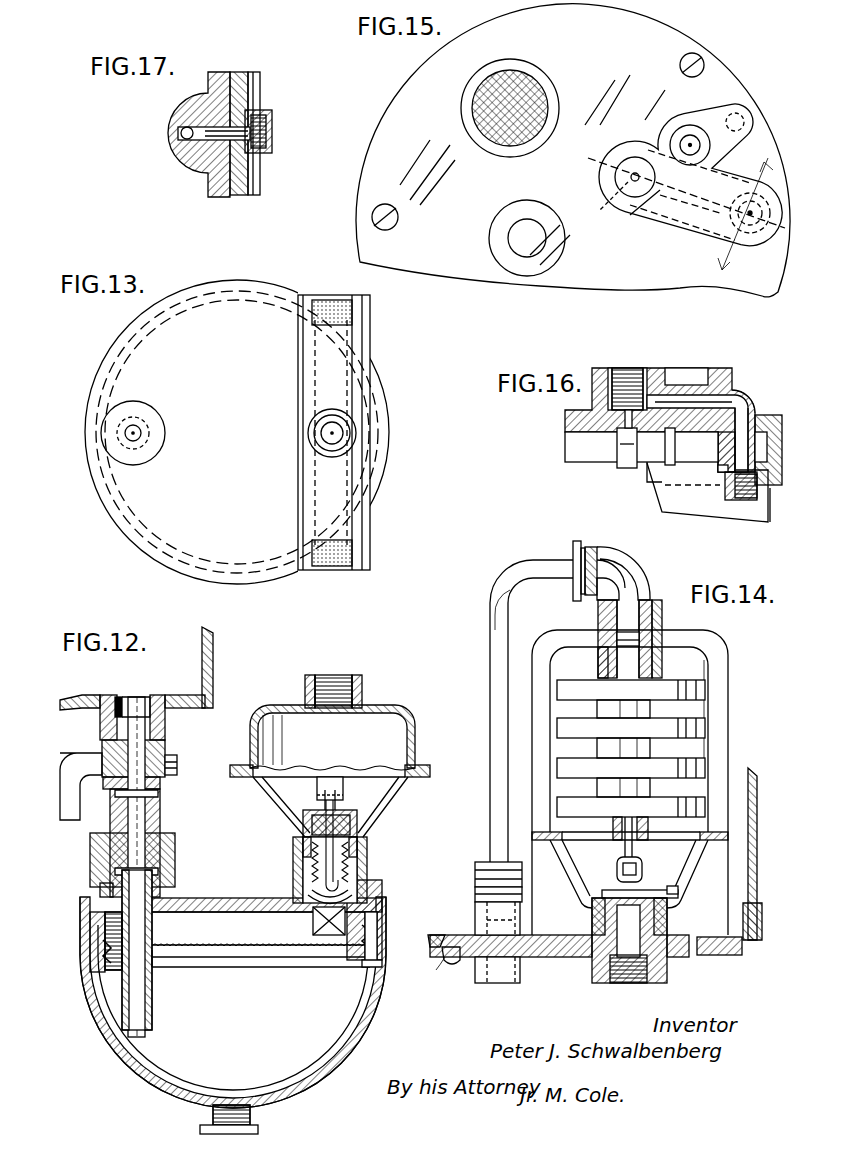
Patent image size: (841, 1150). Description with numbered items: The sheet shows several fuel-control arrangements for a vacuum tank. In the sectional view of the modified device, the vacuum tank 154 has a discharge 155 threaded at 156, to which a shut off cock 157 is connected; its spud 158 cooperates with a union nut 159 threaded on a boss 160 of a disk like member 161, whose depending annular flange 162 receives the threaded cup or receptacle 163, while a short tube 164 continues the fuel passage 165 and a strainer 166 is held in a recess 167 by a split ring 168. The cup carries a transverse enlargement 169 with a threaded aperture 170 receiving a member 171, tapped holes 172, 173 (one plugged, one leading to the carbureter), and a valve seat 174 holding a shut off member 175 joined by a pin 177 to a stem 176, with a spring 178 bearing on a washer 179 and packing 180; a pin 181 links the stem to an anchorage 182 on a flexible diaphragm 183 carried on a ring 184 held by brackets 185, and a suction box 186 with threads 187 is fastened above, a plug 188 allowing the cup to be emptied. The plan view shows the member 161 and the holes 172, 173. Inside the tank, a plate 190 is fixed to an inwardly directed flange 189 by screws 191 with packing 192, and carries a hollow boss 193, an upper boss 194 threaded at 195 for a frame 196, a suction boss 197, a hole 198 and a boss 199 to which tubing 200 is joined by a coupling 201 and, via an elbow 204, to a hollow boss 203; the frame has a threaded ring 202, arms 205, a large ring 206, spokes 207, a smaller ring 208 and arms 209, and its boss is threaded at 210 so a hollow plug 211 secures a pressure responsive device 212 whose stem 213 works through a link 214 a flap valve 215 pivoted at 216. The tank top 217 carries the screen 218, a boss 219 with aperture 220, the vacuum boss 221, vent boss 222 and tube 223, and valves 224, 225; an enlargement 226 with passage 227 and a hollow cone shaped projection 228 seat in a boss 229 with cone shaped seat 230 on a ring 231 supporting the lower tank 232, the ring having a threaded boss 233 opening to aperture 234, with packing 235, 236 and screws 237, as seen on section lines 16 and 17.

In FIG. 15, the section line 16 is at (577, 180).
In FIG. 15, the section line 17— 17 is at (745, 218).
In FIG. 12, the vacuum tank 154 is at (202, 650).
In FIG. 12, the discharge 155 is at (168, 694).
In FIG. 12, the threads 156 is at (165, 728).
In FIG. 12, the shut off cock 157 is at (166, 752).
In FIG. 12, the spud 158 is at (160, 822).
In FIG. 12, the union nut 159 is at (176, 848).
In FIG. 13, the boss 160 is at (158, 422).
In FIG. 12, the boss 160 is at (168, 898).
In FIG. 13, the disk like member 161 is at (237, 432).
In FIG. 12, the disk like member 161 is at (252, 900).
In FIG. 12, the depending annular flange 162 is at (100, 960).
In FIG. 12, the cup or receptacle 163 is at (370, 995).
In FIG. 12, the short tube 164 is at (261, 928).
In FIG. 12, the fuel passage 165 is at (152, 975).
In FIG. 12, the strainer 166 is at (275, 946).
In FIG. 12, the recess 167 is at (380, 966).
In FIG. 12, the split ring 168 is at (348, 968).
In FIG. 13, the transverse enlargement 169 is at (306, 362).
In FIG. 13, the threaded aperture 170 is at (308, 432).
In FIG. 12, the threaded aperture 170 is at (367, 868).
In FIG. 12, the member 171 is at (368, 851).
In FIG. 13, the tapped hole 172 is at (335, 282).
In FIG. 13, the tapped hole 173 is at (318, 568).
In FIG. 12, the valve seat 174 is at (382, 912).
In FIG. 12, the shut off member 175 is at (312, 920).
In FIG. 12, the stem or rod 176 is at (345, 884).
In FIG. 12, the pin 177 is at (308, 894).
In FIG. 12, the spring 178 is at (311, 866).
In FIG. 12, the washer 179 is at (302, 841).
In FIG. 12, the packing 180 is at (315, 826).
In FIG. 12, the pin 181 is at (343, 796).
In FIG. 12, the anchorage 182 is at (329, 776).
In FIG. 12, the flexible diaphragm 183 is at (388, 766).
In FIG. 12, the ring 184 is at (430, 774).
In FIG. 12, the brackets 185 is at (392, 807).
In FIG. 12, the suction box 186 is at (415, 700).
In FIG. 12, the threads 187 is at (330, 674).
In FIG. 12, the plug 188 is at (258, 1128).
In FIG. 14, the inwardly directed flange 189 is at (442, 935).
In FIG. 14, the plate 190 is at (548, 957).
In FIG. 14, the screws 191 is at (450, 968).
In FIG. 14, the packing 192 is at (440, 968).
In FIG. 14, the hollow boss 193 is at (668, 975).
In FIG. 14, the upper boss 194 is at (668, 914).
In FIG. 14, the external threads 195 is at (592, 914).
In FIG. 14, the frame 196 is at (695, 851).
In FIG. 14, the hollow boss 197 is at (514, 983).
In FIG. 14, the hole 198 is at (518, 918).
In FIG. 14, the boss 199 is at (476, 896).
In FIG. 14, the tubing 200 is at (490, 680).
In FIG. 14, the coupling 201 is at (484, 862).
In FIG. 14, the threaded ring 202 is at (667, 920).
In FIG. 14, the hollow boss 203 is at (672, 588).
In FIG. 14, the elbow 204 is at (633, 556).
In FIG. 14, the arms 205 is at (560, 892).
In FIG. 14, the large ring 206 is at (612, 830).
In FIG. 14, the spokes 207 is at (668, 840).
In FIG. 14, the smaller ring 208 is at (645, 835).
In FIG. 14, the arms 209 is at (730, 700).
In FIG. 14, the internal threads 210 is at (664, 668).
In FIG. 14, the hollow plug 211 is at (598, 678).
In FIG. 14, the pressure responsive device 212 is at (631, 748).
In FIG. 14, the stem 213 is at (624, 855).
In FIG. 14, the link 214 is at (644, 870).
In FIG. 14, the flap valve 215 is at (612, 890).
In FIG. 14, the pivot 216 is at (672, 886).
In FIG. 17, the top 217 is at (214, 186).
In FIG. 15, the top 217 is at (573, 150).
In FIG. 16, the top 217 is at (568, 413).
In FIG. 15, the screen 218 is at (485, 108).
In FIG. 15, the boss 219 is at (530, 210).
In FIG. 15, the aperture 220 is at (527, 238).
In FIG. 15, the hollow boss 221 is at (625, 160).
In FIG. 16, the hollow boss 221 is at (620, 368).
In FIG. 15, the hollow boss 222 is at (682, 125).
In FIG. 15, the tube 223 is at (735, 112).
In FIG. 15, the valve 224 is at (603, 201).
In FIG. 16, the valve 224 is at (617, 447).
In FIG. 15, the valve 225 is at (690, 145).
In FIG. 16, the valve 225 is at (662, 446).
In FIG. 15, the enlargement 226 is at (678, 230).
In FIG. 16, the enlargement 226 is at (715, 395).
In FIG. 17, the passage 227 is at (180, 131).
In FIG. 15, the passage 227 is at (700, 245).
In FIG. 16, the passage 227 is at (768, 374).
In FIG. 16, the hollow cone shaped projection 228 is at (770, 391).
In FIG. 16, the boss 229 is at (780, 406).
In FIG. 16, the cone shaped seat 230 is at (718, 443).
In FIG. 17, the ring 231 is at (257, 75).
In FIG. 16, the ring 231 is at (645, 480).
In FIG. 16, the outer or lower tank 232 is at (745, 514).
In FIG. 17, the threaded boss 233 is at (262, 110).
In FIG. 16, the threaded boss 233 is at (725, 490).
In FIG. 17, the aperture 234 is at (262, 146).
In FIG. 16, the aperture 234 is at (718, 470).
In FIG. 17, the packing 235 is at (224, 71).
In FIG. 17, the packing 236 is at (190, 112).
In FIG. 15, the screws 237 is at (728, 50).